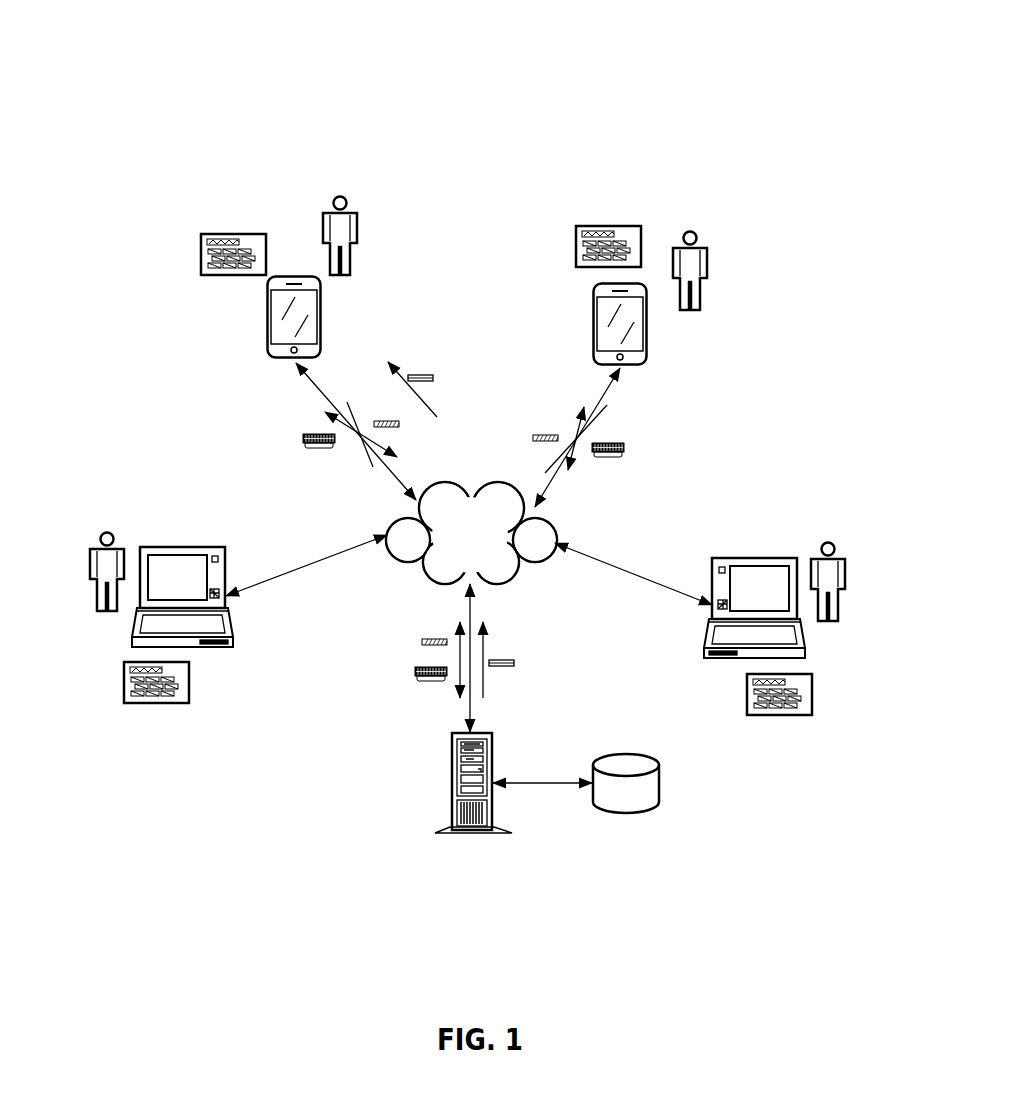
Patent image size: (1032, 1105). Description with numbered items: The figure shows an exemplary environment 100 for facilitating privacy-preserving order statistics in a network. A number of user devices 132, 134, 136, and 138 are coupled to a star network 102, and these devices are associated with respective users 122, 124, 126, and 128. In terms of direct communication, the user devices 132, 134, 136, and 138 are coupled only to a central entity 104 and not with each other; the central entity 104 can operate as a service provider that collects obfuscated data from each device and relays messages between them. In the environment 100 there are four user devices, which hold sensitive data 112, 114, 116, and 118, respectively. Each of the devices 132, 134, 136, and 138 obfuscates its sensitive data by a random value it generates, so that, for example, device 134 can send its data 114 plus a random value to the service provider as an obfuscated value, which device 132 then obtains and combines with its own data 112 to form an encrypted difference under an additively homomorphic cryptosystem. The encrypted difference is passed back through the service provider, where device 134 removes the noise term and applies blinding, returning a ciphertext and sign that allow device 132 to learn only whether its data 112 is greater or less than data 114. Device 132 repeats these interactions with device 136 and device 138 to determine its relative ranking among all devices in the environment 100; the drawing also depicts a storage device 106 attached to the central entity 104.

The environment 100 is at (797, 42).
The star network 102 is at (457, 555).
The central entity / service provider 104 is at (385, 796).
The storage device 106 is at (651, 823).
The sensitive data 112 is at (240, 233).
The sensitive data 114 is at (605, 224).
The sensitive data 116 is at (192, 688).
The sensitive data 118 is at (745, 703).
The user 122 is at (368, 218).
The user 124 is at (718, 251).
The user 126 is at (96, 602).
The user 128 is at (845, 614).
The user device 132 is at (252, 323).
The user device 134 is at (668, 330).
The user device 136 is at (169, 574).
The user device 138 is at (766, 585).